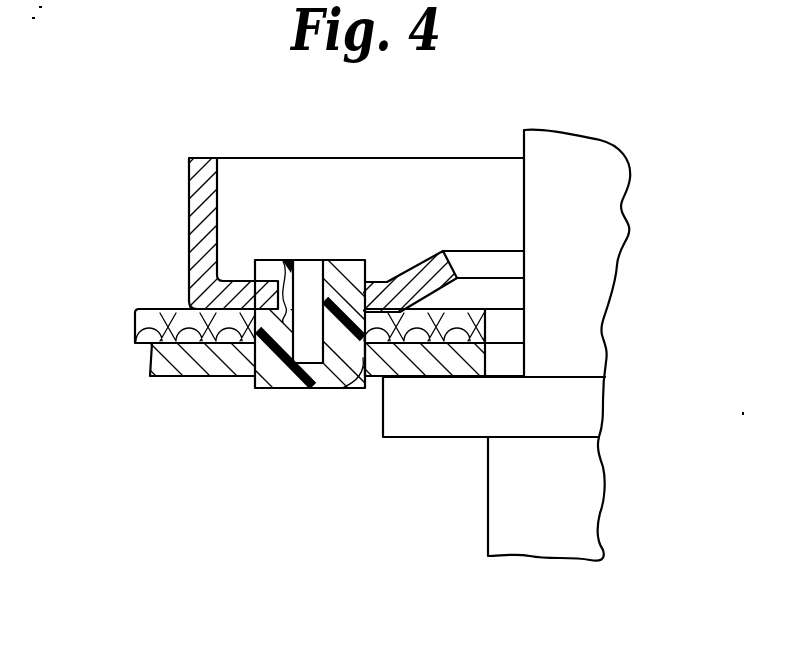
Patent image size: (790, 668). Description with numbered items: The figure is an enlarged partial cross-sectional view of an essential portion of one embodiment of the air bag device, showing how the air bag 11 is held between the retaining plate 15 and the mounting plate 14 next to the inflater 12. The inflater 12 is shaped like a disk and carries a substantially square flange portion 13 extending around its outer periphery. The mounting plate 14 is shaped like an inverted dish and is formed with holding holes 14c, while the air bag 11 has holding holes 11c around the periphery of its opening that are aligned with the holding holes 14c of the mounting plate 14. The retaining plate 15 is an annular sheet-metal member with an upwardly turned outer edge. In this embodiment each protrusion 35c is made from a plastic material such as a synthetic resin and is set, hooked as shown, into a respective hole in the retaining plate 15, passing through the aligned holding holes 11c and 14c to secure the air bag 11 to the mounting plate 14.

The air bag 11 is at (137, 326).
The holding hole 11c is at (284, 264).
The inflater 12 is at (593, 269).
The flange portion 13 is at (587, 401).
The mounting plate 14 is at (155, 367).
The holding hole 14c is at (355, 390).
The retaining plate 15 is at (197, 221).
The protrusion 35c is at (280, 389).